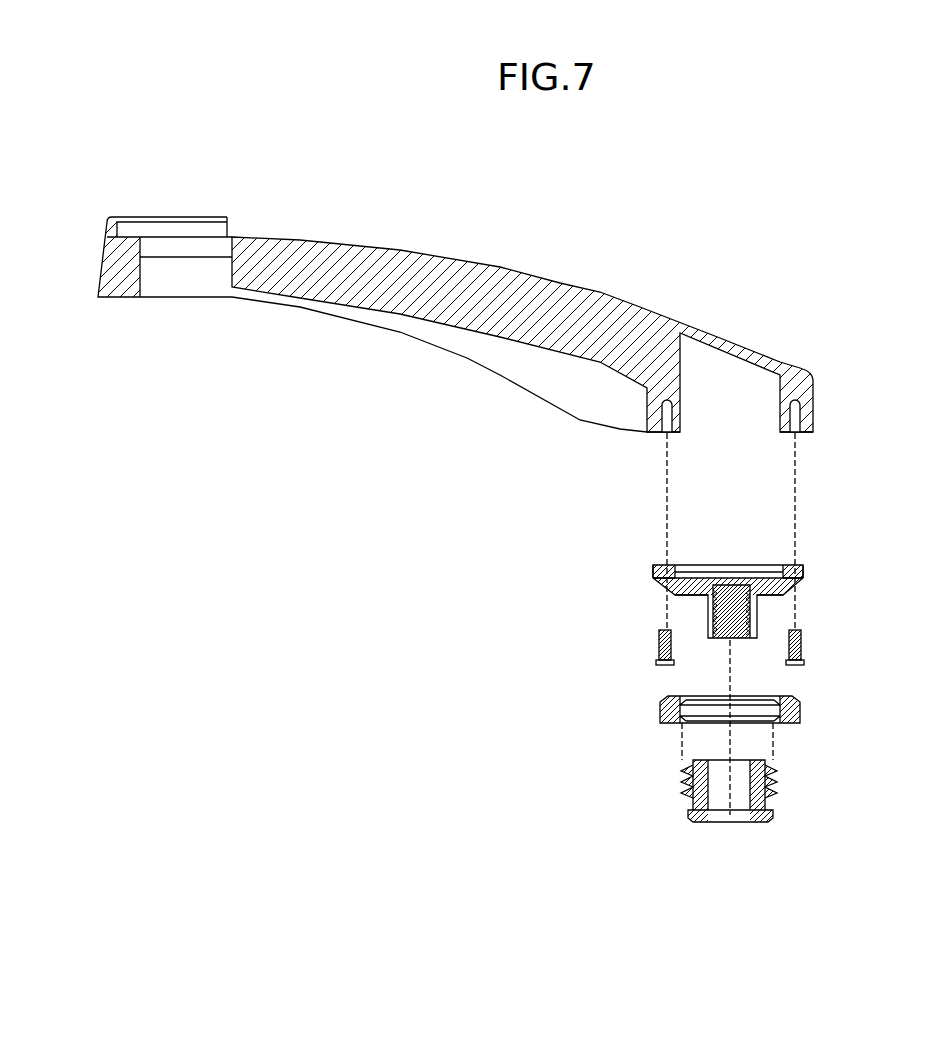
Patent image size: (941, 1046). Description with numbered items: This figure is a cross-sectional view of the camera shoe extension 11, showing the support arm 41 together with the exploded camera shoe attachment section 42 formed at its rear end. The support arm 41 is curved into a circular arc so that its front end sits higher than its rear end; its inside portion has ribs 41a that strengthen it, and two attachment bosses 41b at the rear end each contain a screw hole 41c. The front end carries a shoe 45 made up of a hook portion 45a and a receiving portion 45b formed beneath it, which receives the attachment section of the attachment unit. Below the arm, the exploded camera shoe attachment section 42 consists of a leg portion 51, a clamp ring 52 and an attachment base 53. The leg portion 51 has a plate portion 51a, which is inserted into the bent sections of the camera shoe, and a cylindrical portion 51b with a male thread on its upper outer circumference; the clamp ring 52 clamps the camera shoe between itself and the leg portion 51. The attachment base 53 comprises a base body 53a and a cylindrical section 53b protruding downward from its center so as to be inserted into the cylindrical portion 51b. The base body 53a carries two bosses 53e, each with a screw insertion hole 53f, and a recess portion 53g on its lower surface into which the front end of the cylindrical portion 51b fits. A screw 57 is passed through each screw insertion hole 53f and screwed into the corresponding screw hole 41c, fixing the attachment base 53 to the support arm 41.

The camera shoe extension 11 is at (372, 234).
The support arm 41 is at (512, 281).
The ribs 41a is at (467, 310).
The attachment bosses 41b is at (807, 433).
The screw hole 41c is at (793, 433).
The camera shoe attachment section 42 is at (865, 505).
The shoe 45 is at (146, 210).
The hook portion 45a is at (121, 217).
The receiving portion 45b is at (178, 252).
The leg portion 51 is at (780, 807).
The plate portion 51a is at (688, 815).
The cylindrical portion 51b is at (687, 768).
The clamp ring 52 is at (800, 712).
The attachment base 53 is at (763, 605).
The base body 53a is at (803, 572).
The cylindrical section 53b is at (745, 638).
The bosses 53e is at (783, 565).
The screw insertion hole 53f is at (798, 565).
The recess portion 53g is at (695, 587).
The screw 57 is at (801, 651).